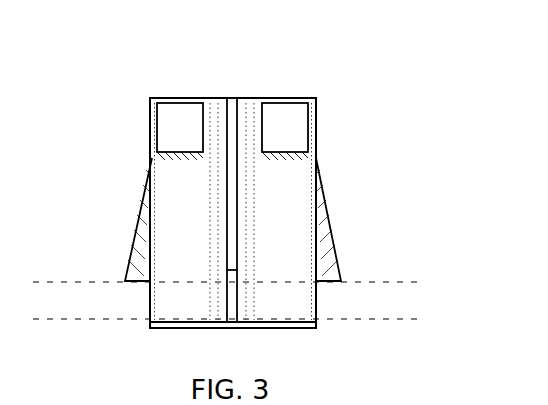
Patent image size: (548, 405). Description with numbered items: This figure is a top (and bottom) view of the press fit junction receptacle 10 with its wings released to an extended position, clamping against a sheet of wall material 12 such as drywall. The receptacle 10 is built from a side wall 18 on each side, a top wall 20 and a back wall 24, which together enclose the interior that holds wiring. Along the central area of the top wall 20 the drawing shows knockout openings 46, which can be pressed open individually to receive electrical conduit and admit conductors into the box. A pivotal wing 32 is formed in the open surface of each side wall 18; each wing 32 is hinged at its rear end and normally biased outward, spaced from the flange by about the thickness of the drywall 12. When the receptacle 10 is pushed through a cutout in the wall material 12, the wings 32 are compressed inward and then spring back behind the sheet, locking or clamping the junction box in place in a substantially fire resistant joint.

The junction receptacle 10 is at (322, 60).
The wall material 12 is at (90, 323).
The side wall 18 is at (318, 298).
The top wall 20 is at (153, 193).
The back wall 24 is at (212, 97).
The pivotal wings 32 is at (332, 245).
The knockout openings 46 is at (232, 131).